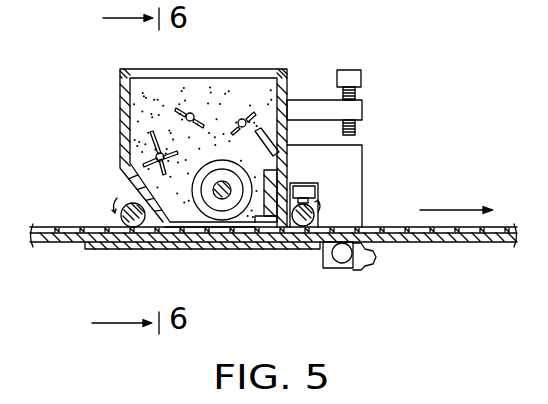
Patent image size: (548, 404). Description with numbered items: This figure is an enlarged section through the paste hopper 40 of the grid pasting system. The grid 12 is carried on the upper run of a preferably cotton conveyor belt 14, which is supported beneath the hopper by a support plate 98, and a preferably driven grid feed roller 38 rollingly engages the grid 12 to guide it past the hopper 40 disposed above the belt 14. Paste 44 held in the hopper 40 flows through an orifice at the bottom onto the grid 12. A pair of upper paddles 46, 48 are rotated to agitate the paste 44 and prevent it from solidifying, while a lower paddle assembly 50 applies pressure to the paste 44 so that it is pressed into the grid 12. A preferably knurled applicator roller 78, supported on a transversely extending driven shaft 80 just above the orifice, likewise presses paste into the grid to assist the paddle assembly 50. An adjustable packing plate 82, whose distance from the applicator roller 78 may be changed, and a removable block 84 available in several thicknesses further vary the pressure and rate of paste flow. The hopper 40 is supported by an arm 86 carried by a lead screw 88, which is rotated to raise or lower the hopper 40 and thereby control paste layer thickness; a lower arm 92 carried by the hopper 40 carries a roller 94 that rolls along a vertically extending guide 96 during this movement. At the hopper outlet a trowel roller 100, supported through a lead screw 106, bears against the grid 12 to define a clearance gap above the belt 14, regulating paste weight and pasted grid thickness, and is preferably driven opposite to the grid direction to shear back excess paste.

The grid 12 is at (37, 229).
The conveyor belt 14 is at (68, 245).
The grid feed roller 38 is at (128, 207).
The paste hopper 40 is at (210, 77).
The paste 44 is at (152, 82).
The upper paddle 46 is at (193, 115).
The upper paddle 48 is at (247, 118).
The lower paddle assembly 50 is at (151, 132).
The applicator roller 78 is at (198, 222).
The shaft 80 is at (218, 186).
The adjustable packing plate 82 is at (274, 140).
The removable block 84 is at (272, 178).
The arm 86 is at (303, 108).
The lead screw 88 is at (357, 93).
The lower arm 92 is at (352, 201).
The roller 94 is at (341, 260).
The guide 96 is at (374, 257).
The support plate 98 is at (120, 250).
The trowel roller 100 is at (301, 224).
The lead screw 106 is at (316, 190).